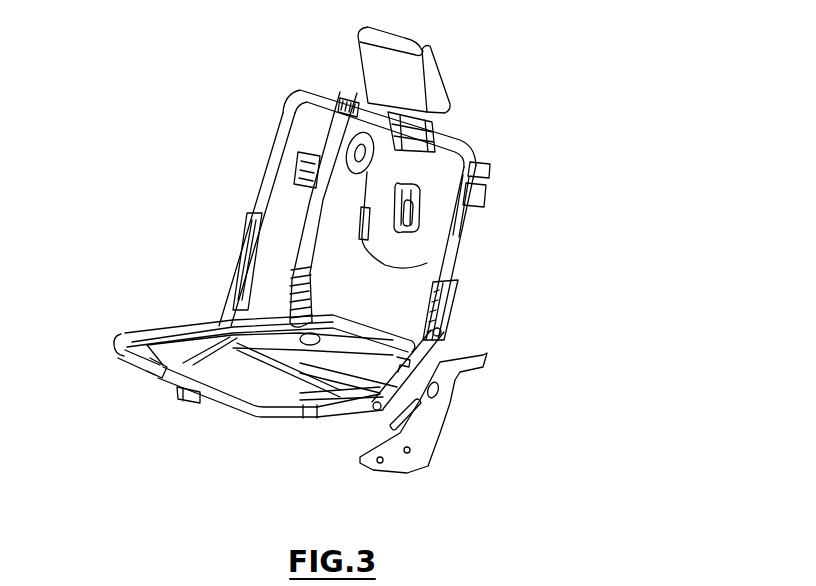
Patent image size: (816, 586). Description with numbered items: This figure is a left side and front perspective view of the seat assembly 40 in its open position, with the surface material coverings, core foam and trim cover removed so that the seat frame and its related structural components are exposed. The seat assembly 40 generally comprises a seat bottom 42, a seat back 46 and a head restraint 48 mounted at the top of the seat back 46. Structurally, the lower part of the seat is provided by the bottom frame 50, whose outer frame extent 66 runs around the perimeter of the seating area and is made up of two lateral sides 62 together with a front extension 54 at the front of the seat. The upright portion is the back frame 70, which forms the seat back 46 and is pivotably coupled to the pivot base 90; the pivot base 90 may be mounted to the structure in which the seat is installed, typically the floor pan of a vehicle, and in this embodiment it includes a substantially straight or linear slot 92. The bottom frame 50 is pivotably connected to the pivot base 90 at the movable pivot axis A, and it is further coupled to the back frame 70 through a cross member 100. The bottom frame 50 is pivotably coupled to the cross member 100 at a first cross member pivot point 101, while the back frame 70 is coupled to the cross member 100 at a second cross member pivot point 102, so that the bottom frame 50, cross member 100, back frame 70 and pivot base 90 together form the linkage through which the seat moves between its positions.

The seat assembly 40 is at (172, 158).
The seat bottom 42 is at (238, 476).
The seat back 46 is at (467, 140).
The head restraint 48 is at (418, 43).
The seat bottom frame portion 50 is at (133, 330).
The front extension 54 is at (155, 372).
The lateral sides 62 is at (150, 346).
The outer frame extent 66 is at (213, 407).
The back frame 70 is at (267, 158).
The pivot base 90 is at (483, 372).
The slot 92 is at (407, 433).
The cross member 100 is at (212, 316).
The first cross member pivot point 101 is at (385, 428).
The second cross member pivot point 102 is at (466, 325).
The movable pivot axis A is at (450, 398).